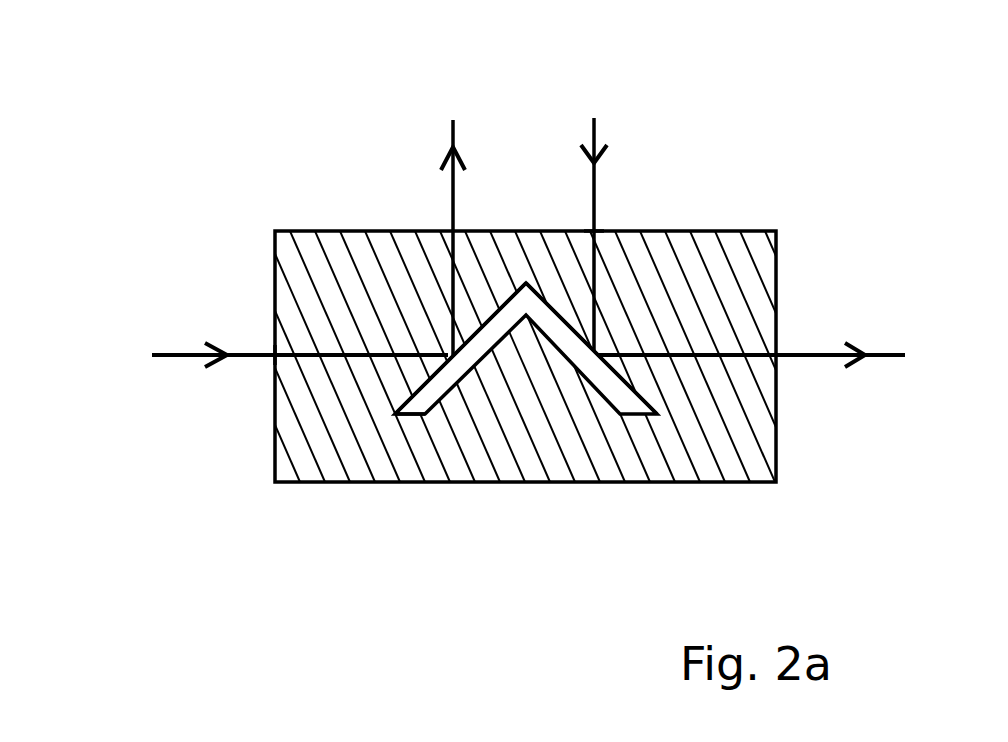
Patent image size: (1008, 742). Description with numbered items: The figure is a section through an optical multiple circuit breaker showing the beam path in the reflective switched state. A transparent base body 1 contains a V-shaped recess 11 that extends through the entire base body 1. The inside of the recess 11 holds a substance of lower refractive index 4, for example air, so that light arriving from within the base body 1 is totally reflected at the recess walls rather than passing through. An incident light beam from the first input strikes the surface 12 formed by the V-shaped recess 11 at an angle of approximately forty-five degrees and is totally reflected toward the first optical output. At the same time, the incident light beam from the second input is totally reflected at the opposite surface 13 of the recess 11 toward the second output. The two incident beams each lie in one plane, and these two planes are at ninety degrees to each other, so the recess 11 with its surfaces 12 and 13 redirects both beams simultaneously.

The base body 1 is at (307, 225).
The substance of lower refractive index 4 is at (625, 398).
The V-shaped recess 11 is at (418, 418).
The surface 12 is at (424, 384).
The surface 13 is at (620, 373).